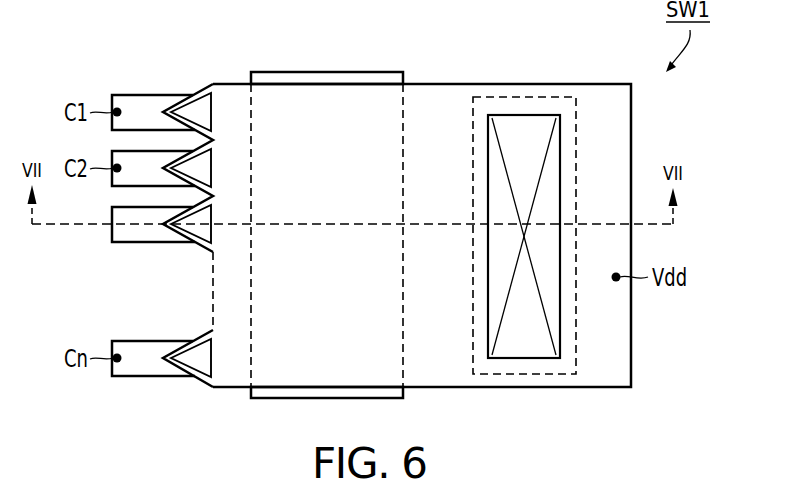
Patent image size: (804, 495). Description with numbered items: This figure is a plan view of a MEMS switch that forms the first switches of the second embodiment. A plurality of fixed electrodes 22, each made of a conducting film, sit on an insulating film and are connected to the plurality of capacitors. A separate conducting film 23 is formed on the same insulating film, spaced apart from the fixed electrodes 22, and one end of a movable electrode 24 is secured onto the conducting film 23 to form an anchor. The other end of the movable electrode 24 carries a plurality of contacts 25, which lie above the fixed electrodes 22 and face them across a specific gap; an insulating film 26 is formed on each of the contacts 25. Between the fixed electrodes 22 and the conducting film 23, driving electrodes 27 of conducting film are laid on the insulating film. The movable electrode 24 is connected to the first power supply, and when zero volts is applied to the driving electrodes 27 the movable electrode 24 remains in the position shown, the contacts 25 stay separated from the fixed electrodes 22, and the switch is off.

The fixed electrodes 22 is at (115, 93).
The conducting film 23 is at (545, 96).
The movable electrode 24 is at (437, 82).
The contacts 25 is at (173, 102).
The insulating film 26 is at (200, 102).
The driving electrodes 27 is at (338, 80).